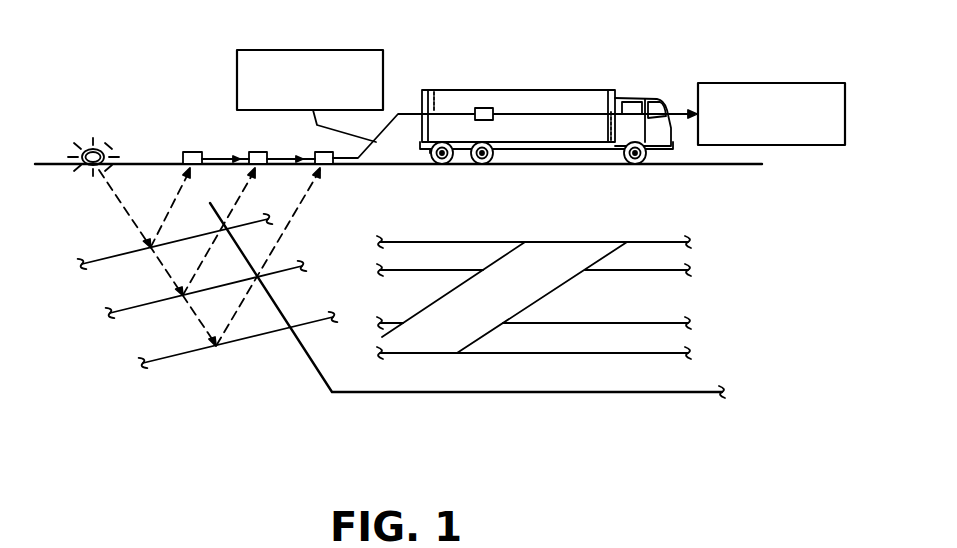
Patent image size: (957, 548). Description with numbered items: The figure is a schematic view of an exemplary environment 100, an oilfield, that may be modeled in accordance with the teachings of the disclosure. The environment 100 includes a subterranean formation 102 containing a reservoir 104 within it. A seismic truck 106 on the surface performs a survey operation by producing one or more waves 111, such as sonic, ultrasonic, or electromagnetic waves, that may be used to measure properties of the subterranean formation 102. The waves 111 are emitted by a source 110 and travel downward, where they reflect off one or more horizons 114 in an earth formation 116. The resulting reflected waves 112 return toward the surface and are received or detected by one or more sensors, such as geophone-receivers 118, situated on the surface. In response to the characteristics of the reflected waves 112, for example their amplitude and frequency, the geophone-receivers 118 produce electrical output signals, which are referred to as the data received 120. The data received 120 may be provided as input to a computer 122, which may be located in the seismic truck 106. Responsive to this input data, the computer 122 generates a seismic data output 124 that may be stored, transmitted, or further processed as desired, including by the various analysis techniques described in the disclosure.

The environment 100 is at (758, 57).
The subterranean formation 102 is at (646, 227).
The reservoir 104 is at (655, 304).
The seismic truck 106 is at (603, 90).
The source 110 is at (87, 148).
The waves 111 is at (141, 238).
The reflected waves 112 is at (172, 206).
The horizons 114 is at (101, 258).
The earth formation 116 is at (310, 360).
The geophone-receivers 118 is at (317, 152).
The data received 120 is at (282, 50).
The computer 122 is at (490, 108).
The seismic data output 124 is at (790, 84).